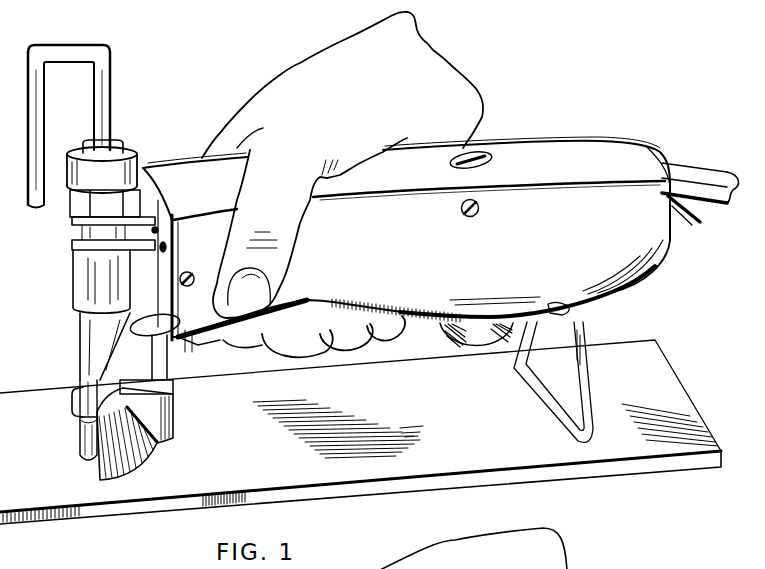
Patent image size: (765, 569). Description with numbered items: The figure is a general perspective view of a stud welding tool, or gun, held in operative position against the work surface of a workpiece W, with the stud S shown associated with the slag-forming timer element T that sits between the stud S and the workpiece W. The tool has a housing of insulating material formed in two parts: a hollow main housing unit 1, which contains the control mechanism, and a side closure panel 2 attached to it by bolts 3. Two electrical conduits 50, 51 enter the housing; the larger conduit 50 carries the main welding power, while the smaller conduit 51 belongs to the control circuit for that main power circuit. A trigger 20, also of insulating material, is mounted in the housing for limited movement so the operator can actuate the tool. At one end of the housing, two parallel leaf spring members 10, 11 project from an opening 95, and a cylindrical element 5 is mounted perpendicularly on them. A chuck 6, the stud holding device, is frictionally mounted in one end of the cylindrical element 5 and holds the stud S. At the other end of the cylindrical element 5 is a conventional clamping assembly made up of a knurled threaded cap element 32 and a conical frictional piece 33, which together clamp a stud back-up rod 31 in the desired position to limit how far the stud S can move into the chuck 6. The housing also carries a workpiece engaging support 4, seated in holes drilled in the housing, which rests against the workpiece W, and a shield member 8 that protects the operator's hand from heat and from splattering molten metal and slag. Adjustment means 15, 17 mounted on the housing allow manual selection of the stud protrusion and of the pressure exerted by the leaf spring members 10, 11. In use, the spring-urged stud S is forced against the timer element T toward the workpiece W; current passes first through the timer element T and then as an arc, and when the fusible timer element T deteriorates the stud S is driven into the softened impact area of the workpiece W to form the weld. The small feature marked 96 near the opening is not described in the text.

The main housing unit 1 is at (580, 150).
The side closure panel 2 is at (612, 196).
The bolts 3 is at (472, 214).
The workpiece engaging support 4 is at (594, 336).
The cylindrical element 5 is at (72, 288).
The chuck 6 is at (80, 331).
The shield member 8 is at (138, 446).
The leaf spring member 10 is at (70, 223).
The leaf spring member 11 is at (70, 246).
The adjustment means 15 is at (180, 345).
The adjustment means 17 is at (442, 340).
The trigger 20 is at (222, 342).
The stud back-up rod 31 is at (85, 48).
The knurled threaded cap element 32 is at (93, 150).
The conical frictional piece 33 is at (124, 153).
The electrical conduit 50 is at (686, 170).
The electrical conduit 51 is at (684, 212).
The opening 95 is at (158, 231).
The slot 96 is at (166, 248).
The stud S is at (72, 404).
The slag-forming timer element T is at (74, 456).
The workpiece W is at (470, 449).